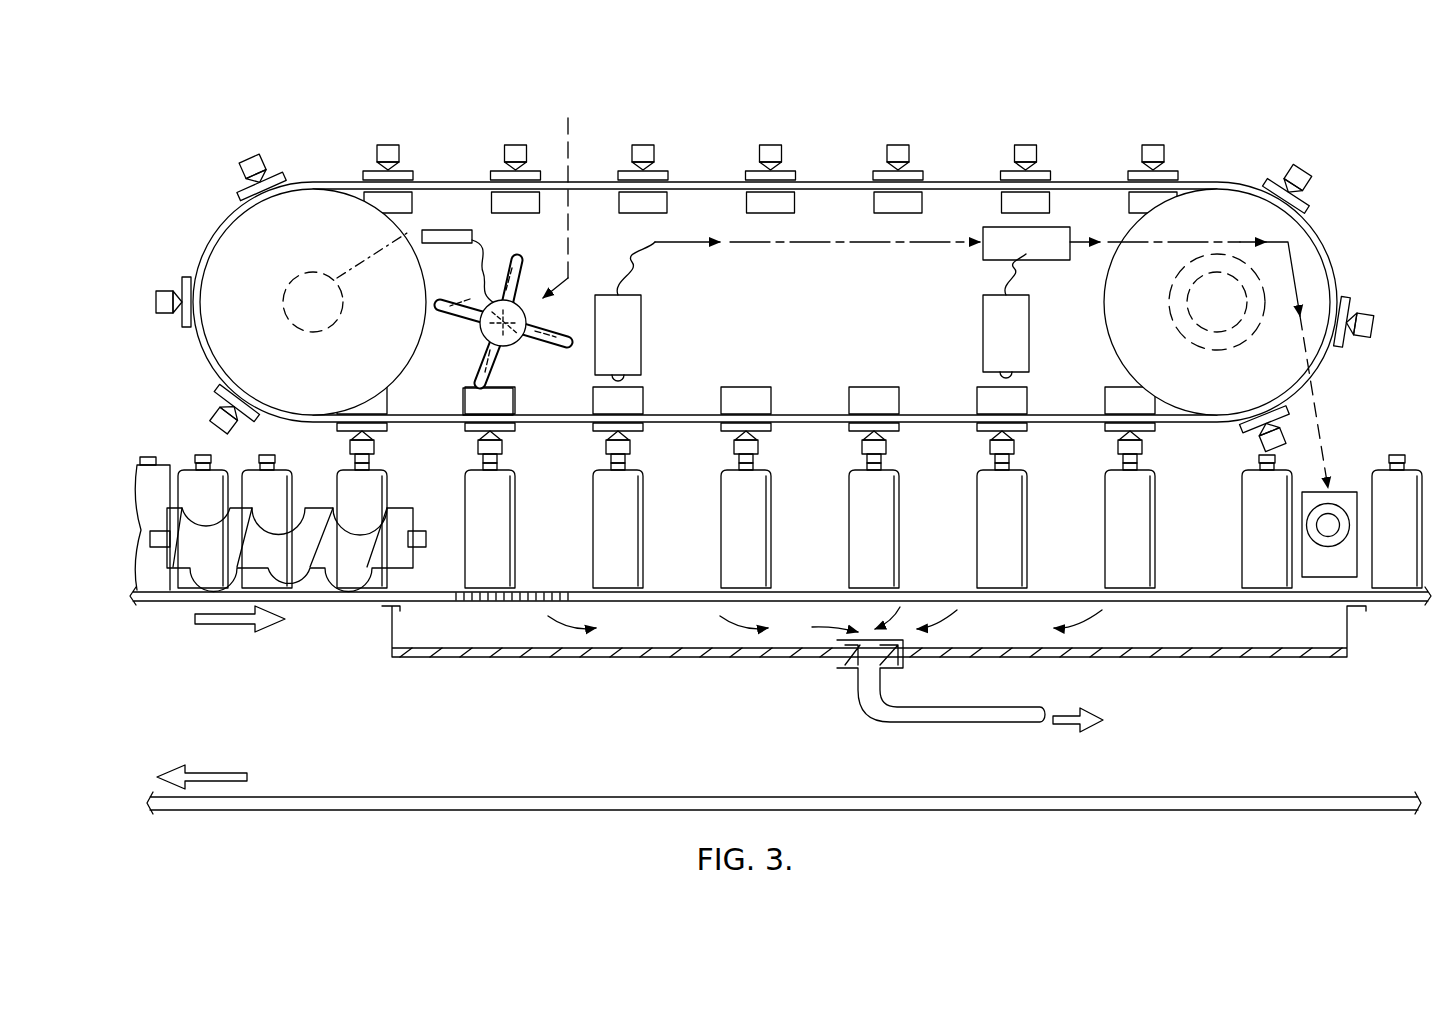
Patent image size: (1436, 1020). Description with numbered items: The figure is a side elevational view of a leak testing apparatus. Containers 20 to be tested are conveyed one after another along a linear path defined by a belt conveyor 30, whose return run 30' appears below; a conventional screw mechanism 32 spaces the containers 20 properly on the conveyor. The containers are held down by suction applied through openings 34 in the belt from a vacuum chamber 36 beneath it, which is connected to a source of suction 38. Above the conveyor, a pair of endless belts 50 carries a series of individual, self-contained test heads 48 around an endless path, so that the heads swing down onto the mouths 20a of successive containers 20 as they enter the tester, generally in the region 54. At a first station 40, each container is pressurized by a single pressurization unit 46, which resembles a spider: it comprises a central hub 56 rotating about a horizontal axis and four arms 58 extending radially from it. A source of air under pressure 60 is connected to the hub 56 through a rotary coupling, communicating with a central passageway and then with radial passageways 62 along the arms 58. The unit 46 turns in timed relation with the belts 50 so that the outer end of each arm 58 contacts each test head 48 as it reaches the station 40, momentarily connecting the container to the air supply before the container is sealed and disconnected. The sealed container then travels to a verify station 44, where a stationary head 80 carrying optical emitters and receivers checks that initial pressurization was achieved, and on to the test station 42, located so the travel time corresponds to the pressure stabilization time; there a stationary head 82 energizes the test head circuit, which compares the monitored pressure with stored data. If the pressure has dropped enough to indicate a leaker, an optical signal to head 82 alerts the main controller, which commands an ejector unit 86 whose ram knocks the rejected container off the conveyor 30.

The containers 20 is at (256, 475).
The mouths 20a is at (160, 477).
The belt conveyor 30 is at (780, 632).
The return run of belt 30' is at (784, 766).
The screw mechanism 32 is at (152, 570).
The openings in the belt 34 is at (488, 603).
The vacuum chamber 36 is at (676, 656).
The source of suction 38 is at (1066, 723).
The first station 40 is at (466, 248).
The test station 42 is at (1003, 253).
The verify station 44 is at (612, 249).
The pressurization unit 46 is at (440, 318).
The test heads 48 is at (870, 157).
The endless belts 50 is at (332, 181).
The region 54 is at (318, 446).
The central hub 56 is at (520, 341).
The arms 58 is at (444, 300).
The source of air under pressure 60 is at (562, 193).
The radial passageways 62 is at (548, 328).
The stationary head 80 is at (642, 326).
The stationary head 82 is at (984, 330).
The ejector unit 86 is at (1340, 488).